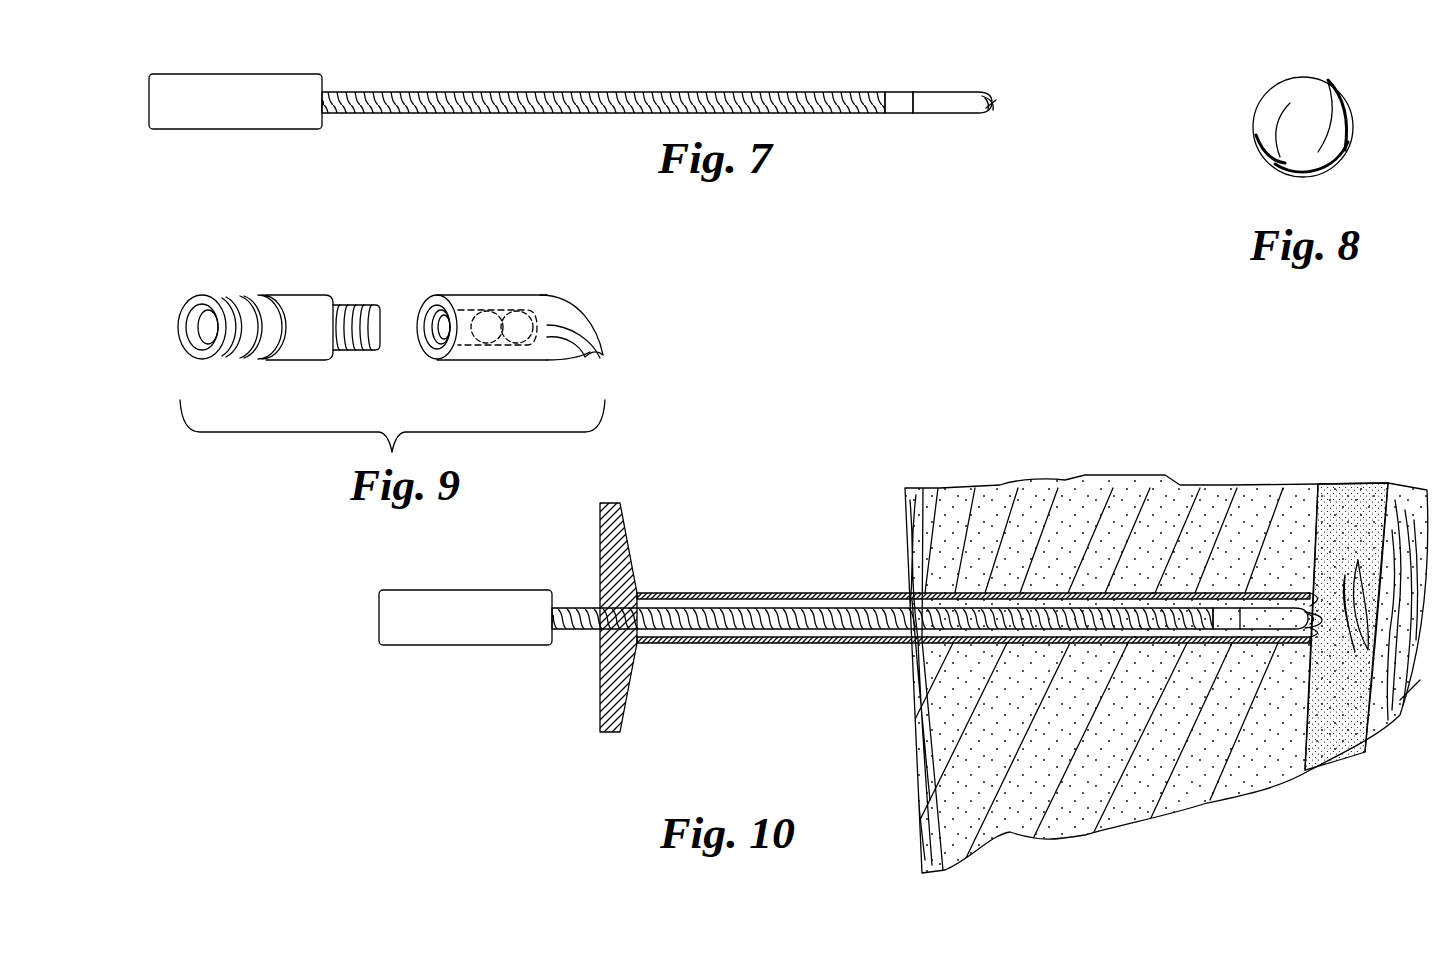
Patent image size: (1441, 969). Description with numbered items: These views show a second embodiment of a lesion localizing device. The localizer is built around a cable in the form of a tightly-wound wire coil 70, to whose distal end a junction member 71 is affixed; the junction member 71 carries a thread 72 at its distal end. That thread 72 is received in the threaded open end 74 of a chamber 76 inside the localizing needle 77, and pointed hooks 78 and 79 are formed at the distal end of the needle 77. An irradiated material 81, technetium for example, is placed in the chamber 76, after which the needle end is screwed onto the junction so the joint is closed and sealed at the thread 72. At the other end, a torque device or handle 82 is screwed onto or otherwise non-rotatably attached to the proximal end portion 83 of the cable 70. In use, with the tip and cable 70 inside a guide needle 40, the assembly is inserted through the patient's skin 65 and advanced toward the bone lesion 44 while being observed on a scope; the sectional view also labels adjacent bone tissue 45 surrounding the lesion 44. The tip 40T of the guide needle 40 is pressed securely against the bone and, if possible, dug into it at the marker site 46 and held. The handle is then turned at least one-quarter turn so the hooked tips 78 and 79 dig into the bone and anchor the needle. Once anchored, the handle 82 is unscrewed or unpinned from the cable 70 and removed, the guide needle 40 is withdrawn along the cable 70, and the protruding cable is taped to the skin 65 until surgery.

In FIG. 7, the handle 82 is at (203, 108).
In FIG. 10, the handle 82 is at (422, 630).
In FIG. 7, the proximal end portion 83 is at (328, 118).
In FIG. 10, the proximal end portion 83 is at (556, 635).
In FIG. 7, the wire coil 70 is at (475, 110).
In FIG. 9, the wire coil 70 is at (196, 360).
In FIG. 10, the wire coil 70 is at (735, 608).
In FIG. 7, the junction member 71 is at (900, 104).
In FIG. 9, the junction member 71 is at (300, 330).
In FIG. 10, the junction member 71 is at (1228, 618).
In FIG. 7, the thread 72 is at (913, 92).
In FIG. 9, the thread 72 is at (362, 305).
In FIG. 7, the localizing needle 77 is at (940, 113).
In FIG. 9, the localizing needle 77 is at (460, 295).
In FIG. 10, the localizing needle 77 is at (1268, 629).
In FIG. 7, the pointed hook 78 is at (994, 96).
In FIG. 8, the pointed hook 78 is at (1330, 78).
In FIG. 9, the pointed hook 78 is at (580, 300).
In FIG. 7, the pointed hook 79 is at (994, 108).
In FIG. 8, the pointed hook 79 is at (1280, 165).
In FIG. 9, the pointed hook 79 is at (598, 362).
In FIG. 9, the threaded open end 74 is at (428, 340).
In FIG. 9, the chamber 76 is at (497, 310).
In FIG. 9, the irradiated material 81 is at (505, 345).
In FIG. 10, the guide needle 40 is at (820, 593).
In FIG. 10, the tip of the guide needle 40T is at (1318, 600).
In FIG. 10, the cortical bone layer 45 is at (1338, 495).
In FIG. 10, the bone lesion 44 is at (1345, 700).
In FIG. 10, the marker site 46 is at (1305, 655).
In FIG. 10, the skin 65 is at (905, 735).